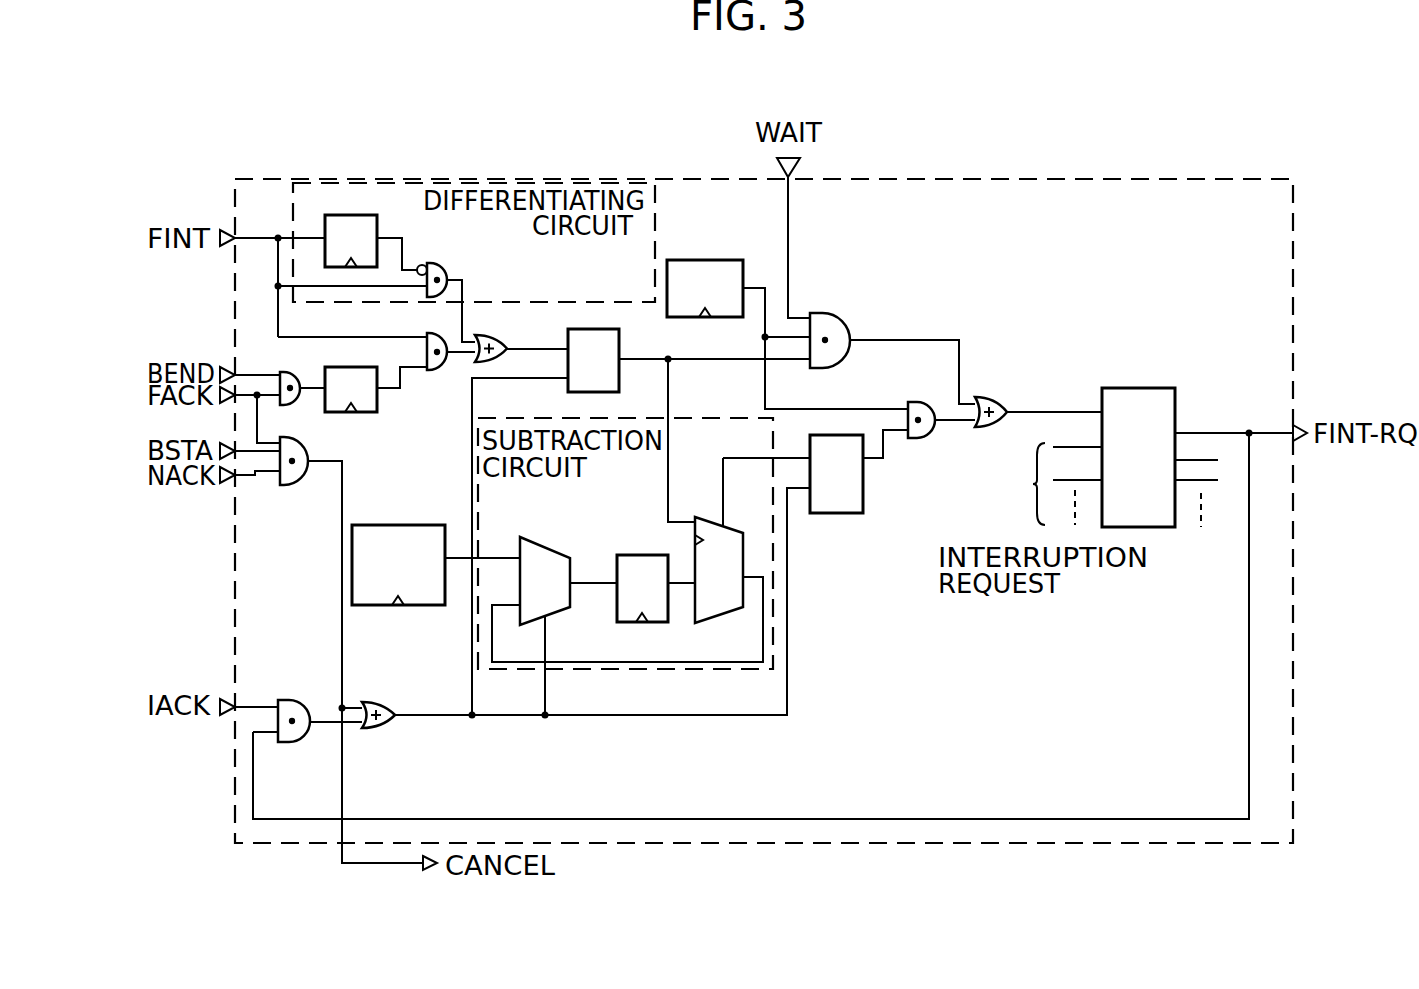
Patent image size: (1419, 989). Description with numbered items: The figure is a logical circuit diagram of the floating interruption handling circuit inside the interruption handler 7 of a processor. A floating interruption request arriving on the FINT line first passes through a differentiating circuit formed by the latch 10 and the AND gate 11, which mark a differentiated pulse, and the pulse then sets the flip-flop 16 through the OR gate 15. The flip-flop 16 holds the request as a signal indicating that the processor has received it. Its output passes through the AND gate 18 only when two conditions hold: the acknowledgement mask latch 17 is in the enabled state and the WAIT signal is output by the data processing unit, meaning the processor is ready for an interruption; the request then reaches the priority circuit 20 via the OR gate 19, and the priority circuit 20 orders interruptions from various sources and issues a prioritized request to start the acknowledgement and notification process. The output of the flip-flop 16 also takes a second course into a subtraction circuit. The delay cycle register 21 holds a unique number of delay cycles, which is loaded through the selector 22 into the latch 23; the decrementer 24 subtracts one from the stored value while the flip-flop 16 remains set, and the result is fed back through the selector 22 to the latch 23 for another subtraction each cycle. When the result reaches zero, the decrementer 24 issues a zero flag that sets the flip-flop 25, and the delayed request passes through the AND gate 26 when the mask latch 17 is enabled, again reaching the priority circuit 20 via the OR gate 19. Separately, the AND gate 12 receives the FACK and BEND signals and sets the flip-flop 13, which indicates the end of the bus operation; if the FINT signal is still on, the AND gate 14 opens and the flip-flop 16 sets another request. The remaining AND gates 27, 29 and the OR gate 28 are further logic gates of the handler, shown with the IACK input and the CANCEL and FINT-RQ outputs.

The interruption handler 7 is at (1047, 180).
The latch 10 is at (377, 220).
The AND gate 11 is at (440, 264).
The AND gate 12 is at (282, 374).
The latch 13 is at (366, 413).
The AND gate 14 is at (428, 336).
The OR gate 15 is at (490, 336).
The flip-flop 16 is at (585, 329).
The mask latch 17 is at (703, 260).
The AND gate 18 is at (840, 318).
The OR gate 19 is at (990, 398).
The priority circuit 20 is at (1153, 388).
The delay cycle register 21 is at (412, 525).
The selector 22 is at (540, 537).
The latch 23 is at (635, 555).
The decrementer 24 is at (720, 619).
The flip-flop 25 is at (830, 513).
The AND gate 26 is at (918, 440).
The AND gate 27 is at (296, 701).
The OR gate 28 is at (380, 729).
The AND gate 29 is at (290, 487).